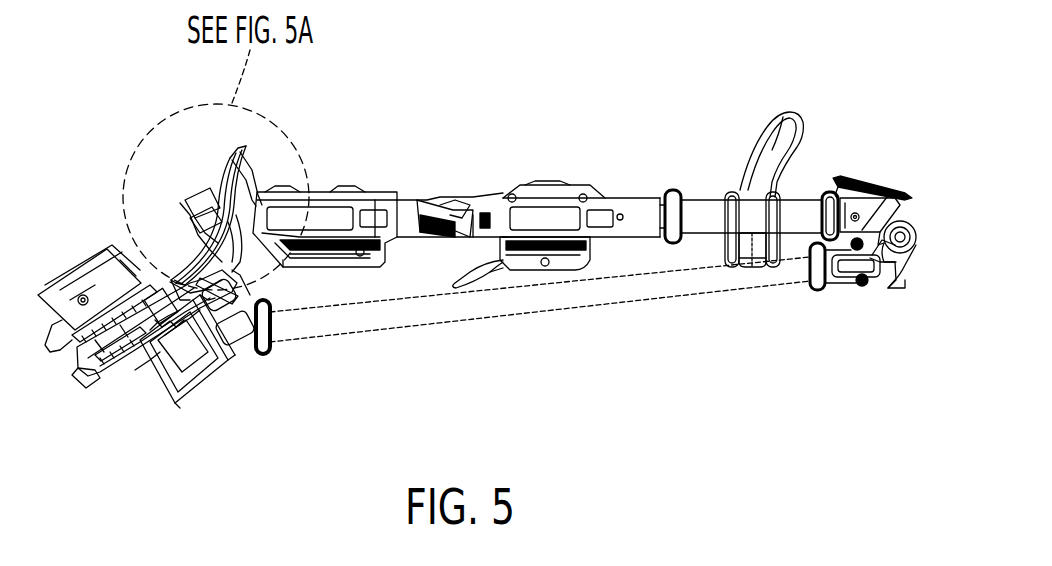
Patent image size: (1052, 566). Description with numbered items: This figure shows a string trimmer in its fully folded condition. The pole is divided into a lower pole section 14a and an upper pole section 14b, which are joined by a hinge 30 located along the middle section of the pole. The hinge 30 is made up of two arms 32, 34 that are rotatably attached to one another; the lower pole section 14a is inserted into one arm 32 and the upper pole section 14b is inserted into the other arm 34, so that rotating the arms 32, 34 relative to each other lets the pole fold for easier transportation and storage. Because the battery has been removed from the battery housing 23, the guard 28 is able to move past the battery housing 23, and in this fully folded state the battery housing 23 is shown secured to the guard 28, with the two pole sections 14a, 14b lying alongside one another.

The lower pole section 14a is at (588, 293).
The upper pole section 14b is at (707, 213).
The battery housing 23 is at (340, 192).
The guard 28 is at (222, 163).
The hinge 30 is at (916, 160).
The arm 32 is at (845, 283).
The arm 34 is at (827, 192).